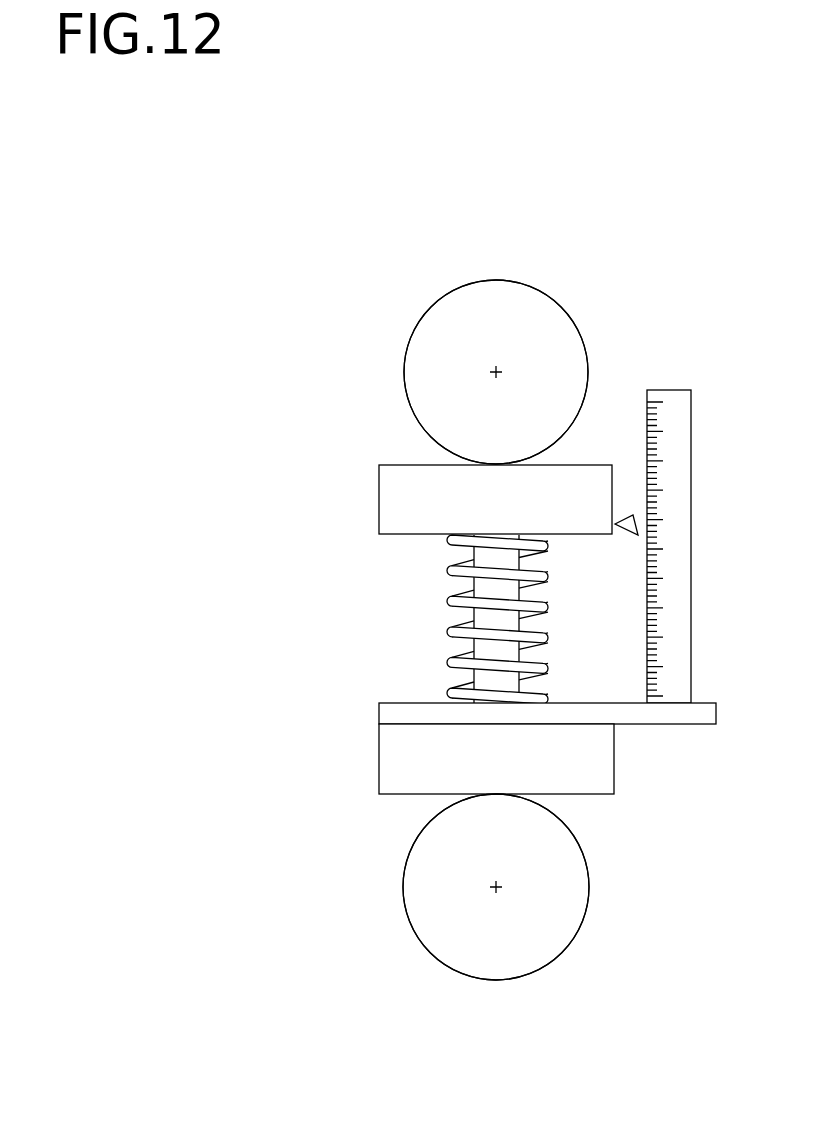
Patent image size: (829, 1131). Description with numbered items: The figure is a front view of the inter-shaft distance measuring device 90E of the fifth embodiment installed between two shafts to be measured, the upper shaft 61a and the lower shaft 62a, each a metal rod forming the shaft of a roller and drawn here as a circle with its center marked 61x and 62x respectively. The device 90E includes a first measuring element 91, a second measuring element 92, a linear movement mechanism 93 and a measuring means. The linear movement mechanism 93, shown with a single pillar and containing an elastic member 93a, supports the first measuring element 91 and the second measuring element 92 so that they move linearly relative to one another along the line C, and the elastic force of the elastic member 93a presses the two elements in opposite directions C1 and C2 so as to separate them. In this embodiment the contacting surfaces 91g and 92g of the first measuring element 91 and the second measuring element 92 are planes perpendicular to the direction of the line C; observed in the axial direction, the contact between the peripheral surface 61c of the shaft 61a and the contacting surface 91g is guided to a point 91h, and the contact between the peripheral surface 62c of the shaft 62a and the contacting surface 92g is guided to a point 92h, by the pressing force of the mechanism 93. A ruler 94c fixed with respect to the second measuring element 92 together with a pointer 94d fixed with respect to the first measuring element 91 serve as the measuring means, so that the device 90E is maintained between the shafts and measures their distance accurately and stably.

The shaft 61a is at (447, 312).
The peripheral surface 61c is at (404, 367).
The rotation axis of first roller 61x is at (496, 372).
The line C is at (497, 303).
The contacting surface 91g is at (427, 467).
The inter-shaft distance measuring device 90E is at (352, 494).
The linear movement mechanism 93 is at (418, 610).
The first measuring element 91 is at (394, 523).
The elastic member 93a is at (455, 658).
The ruler 94c is at (682, 650).
The indicator 94d is at (633, 515).
The second measuring element 92 is at (605, 763).
The point 91h is at (496, 465).
The point 92h is at (496, 794).
The contacting surface 92g is at (402, 794).
The shaft 62a is at (450, 943).
The peripheral surface 62c is at (588, 892).
The rotation axis of second roller 62x is at (496, 887).
The direction C1 is at (496, 1045).
The direction C2 is at (498, 1067).